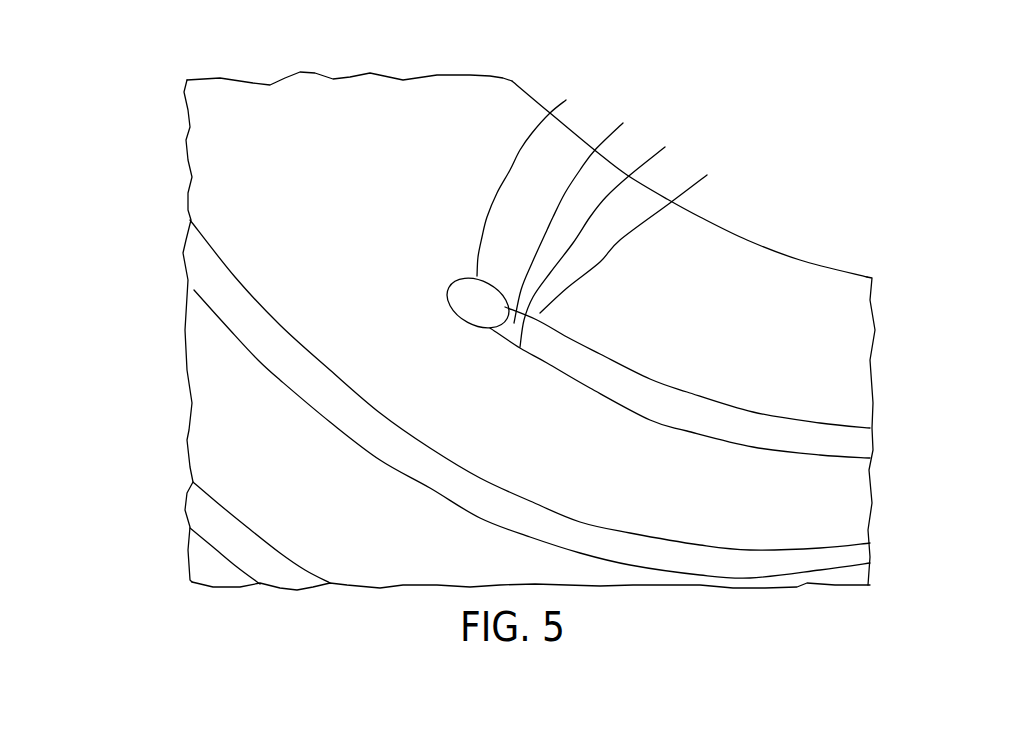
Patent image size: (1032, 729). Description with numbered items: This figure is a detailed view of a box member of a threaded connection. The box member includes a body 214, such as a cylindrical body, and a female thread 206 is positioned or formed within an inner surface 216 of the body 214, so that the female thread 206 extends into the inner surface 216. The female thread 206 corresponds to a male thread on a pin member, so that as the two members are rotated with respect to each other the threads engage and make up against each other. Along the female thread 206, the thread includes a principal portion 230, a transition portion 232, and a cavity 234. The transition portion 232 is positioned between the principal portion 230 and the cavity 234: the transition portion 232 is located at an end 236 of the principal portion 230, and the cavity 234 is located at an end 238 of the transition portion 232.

The female thread 206 is at (247, 320).
The body 214 is at (250, 173).
The inner surface 216 is at (325, 97).
The principal portion 230 is at (590, 366).
The transition portion 232 is at (618, 232).
The cavity 234 is at (525, 204).
The end 236 is at (649, 230).
The end 238 is at (590, 210).